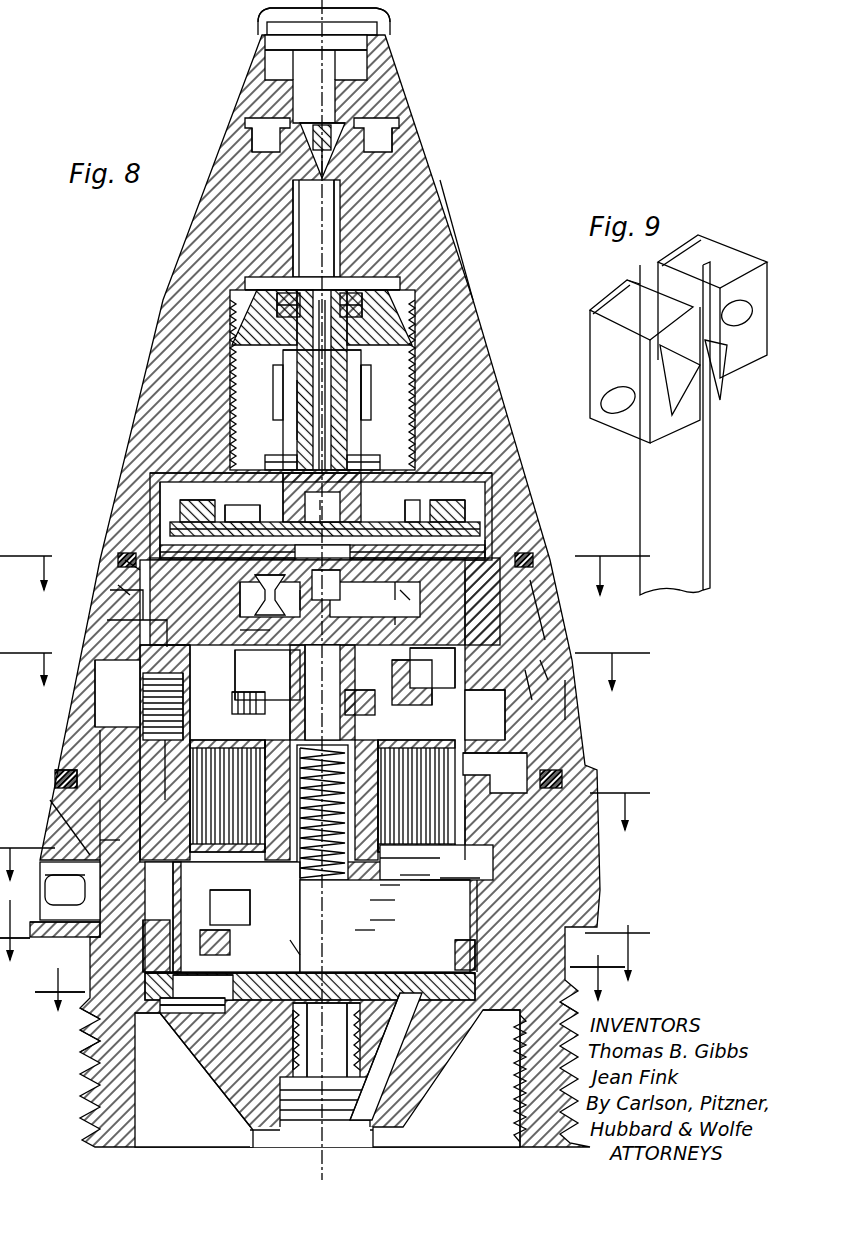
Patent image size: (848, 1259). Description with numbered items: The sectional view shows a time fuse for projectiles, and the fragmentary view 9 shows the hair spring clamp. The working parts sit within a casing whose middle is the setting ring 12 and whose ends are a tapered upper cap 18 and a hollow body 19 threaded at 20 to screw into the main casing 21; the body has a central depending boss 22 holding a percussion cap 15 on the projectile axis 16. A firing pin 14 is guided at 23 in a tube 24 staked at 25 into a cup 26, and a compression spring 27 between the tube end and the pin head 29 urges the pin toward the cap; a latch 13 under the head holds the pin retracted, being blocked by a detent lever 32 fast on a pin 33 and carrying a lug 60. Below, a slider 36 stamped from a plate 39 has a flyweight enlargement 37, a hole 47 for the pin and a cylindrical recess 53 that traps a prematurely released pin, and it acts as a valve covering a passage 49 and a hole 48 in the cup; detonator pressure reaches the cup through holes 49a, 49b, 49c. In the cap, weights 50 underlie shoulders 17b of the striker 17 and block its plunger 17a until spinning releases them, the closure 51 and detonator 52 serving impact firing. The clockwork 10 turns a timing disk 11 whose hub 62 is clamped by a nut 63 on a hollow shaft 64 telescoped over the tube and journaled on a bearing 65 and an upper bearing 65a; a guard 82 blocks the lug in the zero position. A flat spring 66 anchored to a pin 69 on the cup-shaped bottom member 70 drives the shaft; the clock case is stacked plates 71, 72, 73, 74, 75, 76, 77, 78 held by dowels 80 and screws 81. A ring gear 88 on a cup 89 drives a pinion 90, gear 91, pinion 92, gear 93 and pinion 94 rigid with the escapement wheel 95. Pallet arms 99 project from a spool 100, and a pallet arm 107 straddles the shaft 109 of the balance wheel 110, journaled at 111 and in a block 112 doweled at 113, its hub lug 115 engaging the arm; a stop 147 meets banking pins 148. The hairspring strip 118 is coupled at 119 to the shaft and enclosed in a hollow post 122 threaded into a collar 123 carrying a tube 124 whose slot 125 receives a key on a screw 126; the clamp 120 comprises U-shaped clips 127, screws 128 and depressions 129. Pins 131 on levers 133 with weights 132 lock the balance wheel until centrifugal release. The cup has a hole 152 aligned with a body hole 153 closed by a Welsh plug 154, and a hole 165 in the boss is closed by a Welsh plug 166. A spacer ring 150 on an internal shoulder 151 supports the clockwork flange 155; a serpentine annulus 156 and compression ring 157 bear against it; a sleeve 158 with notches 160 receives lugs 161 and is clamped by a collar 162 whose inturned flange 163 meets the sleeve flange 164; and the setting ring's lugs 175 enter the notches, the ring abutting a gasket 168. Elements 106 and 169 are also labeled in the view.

In FIG. 8, the clockwork 10 is at (190, 482).
In FIG. 8, the timing disk 11 is at (455, 890).
In FIG. 8, the setting ring 12 is at (565, 696).
In FIG. 8, the latch 13 is at (300, 978).
In FIG. 8, the firing pin 14 is at (368, 936).
In FIG. 8, the percussion cap 15 is at (294, 1032).
In FIG. 8, the projectile axis 16 is at (340, 224).
In FIG. 8, the striker 17 is at (330, 170).
In FIG. 8, the plunger 17a is at (330, 70).
In FIG. 8, the shoulders 17b is at (316, 122).
In FIG. 8, the upper cap 18 is at (450, 212).
In FIG. 8, the body 19 is at (95, 1046).
In FIG. 8, the thread 20 is at (82, 1072).
In FIG. 8, the main casing 21 is at (330, 993).
In FIG. 8, the boss 22 is at (242, 1107).
In FIG. 8, the guide 23 is at (386, 926).
In FIG. 8, the tube 24 is at (372, 862).
In FIG. 8, the staking 25 is at (296, 992).
In FIG. 8, the cup 26 is at (495, 920).
In FIG. 8, the compression spring 27 is at (346, 800).
In FIG. 8, the head 29 is at (392, 905).
In FIG. 8, the detent lever 32 is at (200, 945).
In FIG. 8, the pin 33 is at (225, 976).
In FIG. 8, the slider 36 is at (430, 990).
In FIG. 8, the enlargement 37 is at (245, 1030).
In FIG. 8, the plate 39 is at (160, 1012).
In FIG. 8, the hole 47 is at (400, 1000).
In FIG. 8, the hole 48 is at (456, 944).
In FIG. 8, the passage 49 is at (430, 1035).
In FIG. 8, the hole 49a is at (446, 880).
In FIG. 8, the hole 49b is at (415, 878).
In FIG. 8, the hole 49c is at (262, 725).
In FIG. 8, the weights 50 is at (285, 150).
In FIG. 8, the closure 51 is at (390, 20).
In FIG. 8, the detonator 52 is at (340, 197).
In FIG. 8, the cylindrical recess 53 is at (322, 1000).
In FIG. 8, the lug 60 is at (175, 878).
In FIG. 8, the hub 62 is at (398, 892).
In FIG. 8, the nut 63 is at (268, 914).
In FIG. 8, the hollow shaft 64 is at (290, 830).
In FIG. 8, the bearing 65 is at (290, 952).
In FIG. 8, the upper bearing 65a is at (302, 713).
In FIG. 8, the spring 66 is at (194, 778).
In FIG. 8, the pin 69 is at (472, 778).
In FIG. 8, the bottom member 70 is at (490, 850).
In FIG. 8, the plate 71 is at (546, 668).
In FIG. 8, the plate 72 is at (205, 650).
In FIG. 8, the plate 73 is at (472, 636).
In FIG. 8, the plate 74 is at (466, 621).
In FIG. 8, the plate 75 is at (466, 596).
In FIG. 8, the plate 76 is at (470, 576).
In FIG. 8, the plate 77 is at (490, 545).
In FIG. 8, the plate 78 is at (462, 512).
In FIG. 8, the dowels 80 is at (482, 700).
In FIG. 8, the screws 81 is at (192, 700).
In FIG. 8, the guard 82 is at (190, 852).
In FIG. 8, the ring gear 88 is at (255, 703).
In FIG. 8, the cup 89 is at (195, 732).
In FIG. 8, the pinion 90 is at (412, 682).
In FIG. 8, the gear 91 is at (440, 666).
In FIG. 8, the pinion 92 is at (355, 705).
In FIG. 8, the gear 93 is at (305, 672).
In FIG. 8, the pinion 94 is at (305, 652).
In FIG. 8, the escapement wheel 95 is at (400, 622).
In FIG. 8, the arms 99 is at (265, 650).
In FIG. 8, the spool 100 is at (258, 600).
In FIG. 8, the disc 106 is at (252, 634).
In FIG. 8, the arm 107 is at (280, 585).
In FIG. 8, the shaft 109 is at (340, 521).
In FIG. 8, the balance wheel 110 is at (262, 522).
In FIG. 8, the journal 111 is at (308, 605).
In FIG. 8, the block 112 is at (345, 532).
In FIG. 8, the dowel 113 is at (412, 512).
In FIG. 8, the lug 115 is at (341, 575).
In FIG. 8, the strip 118 is at (326, 420).
In FIG. 9, the strip 118 is at (697, 497).
In FIG. 8, the coupling 119 is at (335, 505).
In FIG. 8, the clamp 120 is at (358, 285).
In FIG. 9, the clamp 120 is at (622, 283).
In FIG. 8, the hollow post 122 is at (283, 492).
In FIG. 8, the collar 123 is at (363, 393).
In FIG. 8, the tube 124 is at (350, 352).
In FIG. 8, the slot 125 is at (297, 427).
In FIG. 8, the screw 126 is at (285, 455).
In FIG. 8, the clips 127 is at (288, 287).
In FIG. 9, the clips 127 is at (716, 250).
In FIG. 8, the screws 128 is at (290, 317).
In FIG. 9, the depressions 129 is at (684, 360).
In FIG. 8, the pins 131 is at (200, 522).
In FIG. 8, the weights 132 is at (216, 560).
In FIG. 8, the levers 133 is at (260, 515).
In FIG. 8, the stop 147 is at (400, 585).
In FIG. 8, the banking pins 148 is at (404, 592).
In FIG. 8, the spacer ring 150 is at (120, 826).
In FIG. 8, the internal shoulder 151 is at (120, 846).
In FIG. 8, the hole 152 is at (160, 920).
In FIG. 8, the hole 153 is at (90, 918).
In FIG. 8, the Welsh plug 154 is at (95, 880).
In FIG. 8, the external flange 155 is at (96, 822).
In FIG. 8, the serpentine annulus 156 is at (180, 760).
In FIG. 8, the compression ring 157 is at (120, 726).
In FIG. 8, the sleeve 158 is at (130, 627).
In FIG. 8, the notches 160 is at (170, 510).
In FIG. 8, the lugs 161 is at (530, 678).
In FIG. 8, the collar 162 is at (100, 745).
In FIG. 8, the inturned flange 163 is at (118, 606).
In FIG. 8, the external flange 164 is at (545, 602).
In FIG. 8, the hole 165 is at (200, 1012).
In FIG. 8, the Welsh plug 166 is at (226, 1010).
In FIG. 8, the gasket 168 is at (60, 776).
In FIG. 8, the wall 169 is at (125, 588).
In FIG. 8, the lugs 175 is at (135, 565).
In FIG. 8, the section line 9 is at (15, 924).